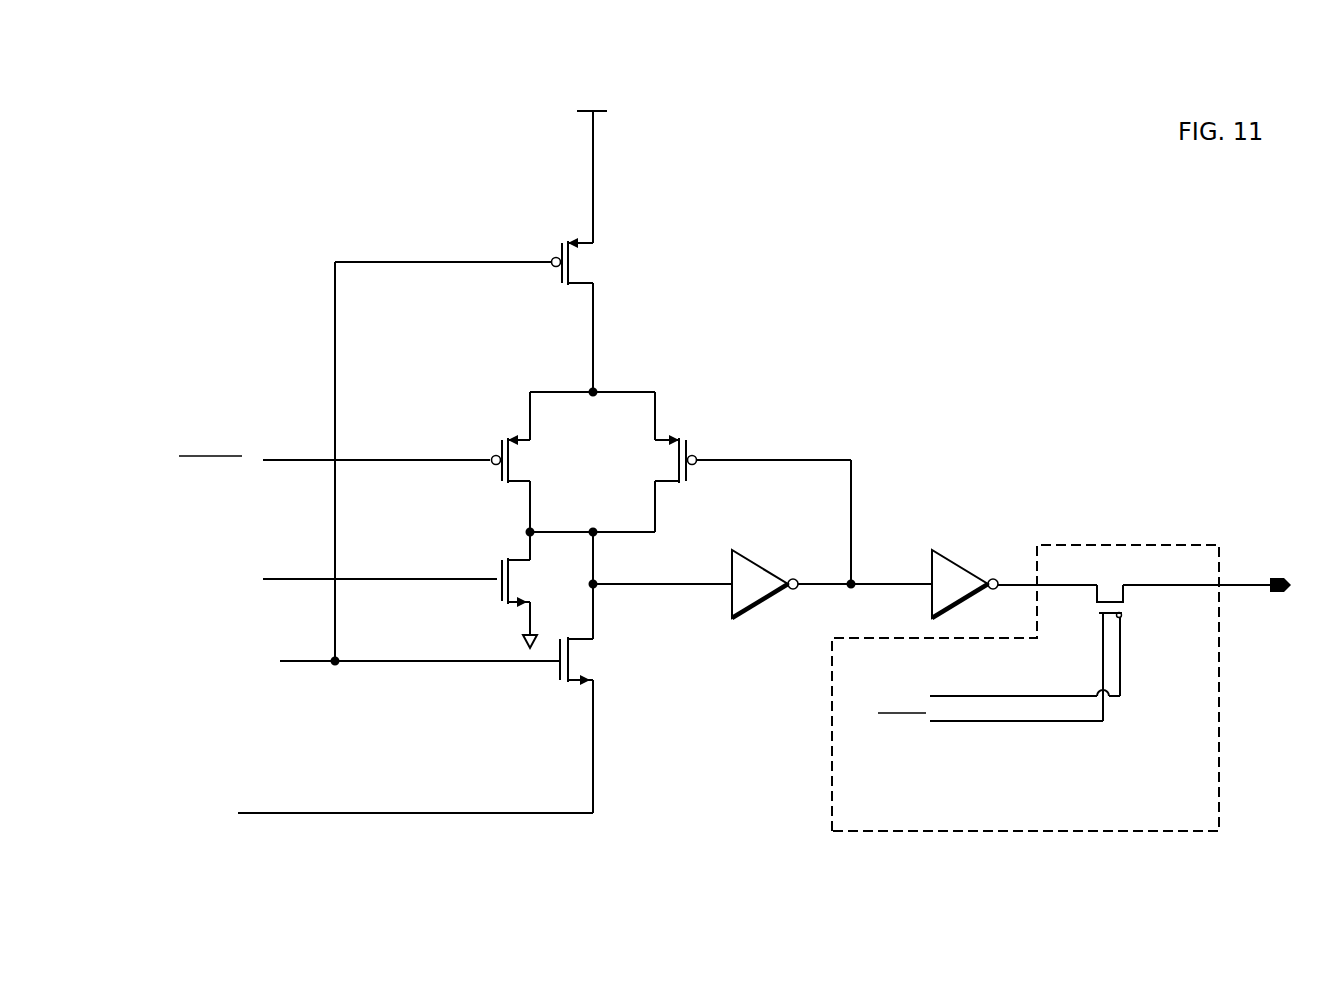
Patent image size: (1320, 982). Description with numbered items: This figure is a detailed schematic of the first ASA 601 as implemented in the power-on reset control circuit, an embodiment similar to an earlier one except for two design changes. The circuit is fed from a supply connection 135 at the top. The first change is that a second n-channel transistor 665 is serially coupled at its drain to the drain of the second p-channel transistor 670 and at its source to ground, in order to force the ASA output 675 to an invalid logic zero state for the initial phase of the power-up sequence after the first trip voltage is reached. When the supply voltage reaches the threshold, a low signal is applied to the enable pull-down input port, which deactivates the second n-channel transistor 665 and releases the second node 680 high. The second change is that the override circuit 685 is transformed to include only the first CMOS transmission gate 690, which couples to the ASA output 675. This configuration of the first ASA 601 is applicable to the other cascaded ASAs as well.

The first ASA 601 is at (866, 254).
The supply voltage 135 is at (598, 111).
The second p-channel transistor 670 is at (518, 464).
The second n-channel transistor 665 is at (525, 590).
The second node 680 is at (600, 581).
The override circuit 685 is at (1194, 817).
The first CMOS transmission gate 690 is at (1112, 597).
The ASA output 675 is at (1250, 590).